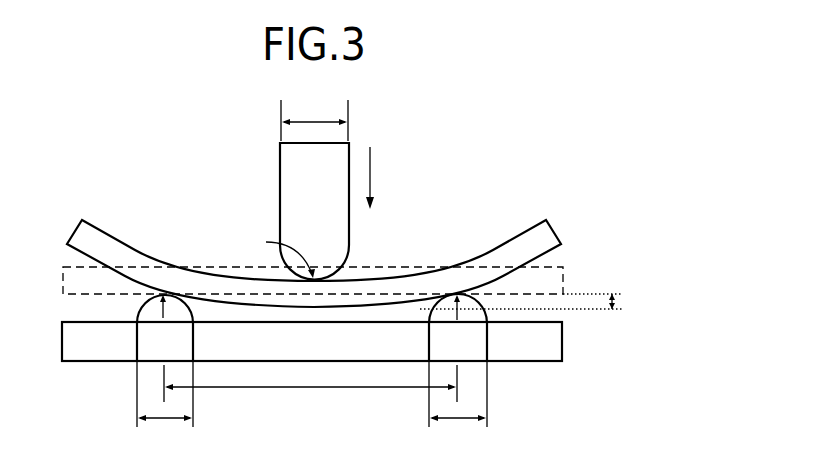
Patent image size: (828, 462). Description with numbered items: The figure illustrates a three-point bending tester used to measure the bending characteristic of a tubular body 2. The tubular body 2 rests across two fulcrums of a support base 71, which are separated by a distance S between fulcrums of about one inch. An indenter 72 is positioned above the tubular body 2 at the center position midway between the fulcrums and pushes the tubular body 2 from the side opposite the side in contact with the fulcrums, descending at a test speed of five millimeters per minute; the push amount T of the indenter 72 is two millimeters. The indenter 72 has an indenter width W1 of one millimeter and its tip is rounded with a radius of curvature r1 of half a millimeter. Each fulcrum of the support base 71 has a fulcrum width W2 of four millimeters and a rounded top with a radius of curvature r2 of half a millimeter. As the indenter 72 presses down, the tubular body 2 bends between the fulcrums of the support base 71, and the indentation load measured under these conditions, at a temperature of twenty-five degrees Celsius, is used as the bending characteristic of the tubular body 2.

The steel plate (workpiece) 2 is at (515, 252).
The support base 71 is at (99, 340).
The indenter 72 is at (287, 180).
The indenter width W1 is at (314, 117).
The fulcrum width W2 is at (312, 408).
The distance between fulcrums S is at (310, 392).
The push amount T is at (614, 304).
The radius of curvature of the indenter r1 is at (279, 254).
The radius of curvature of each fulcrum r2 is at (160, 314).